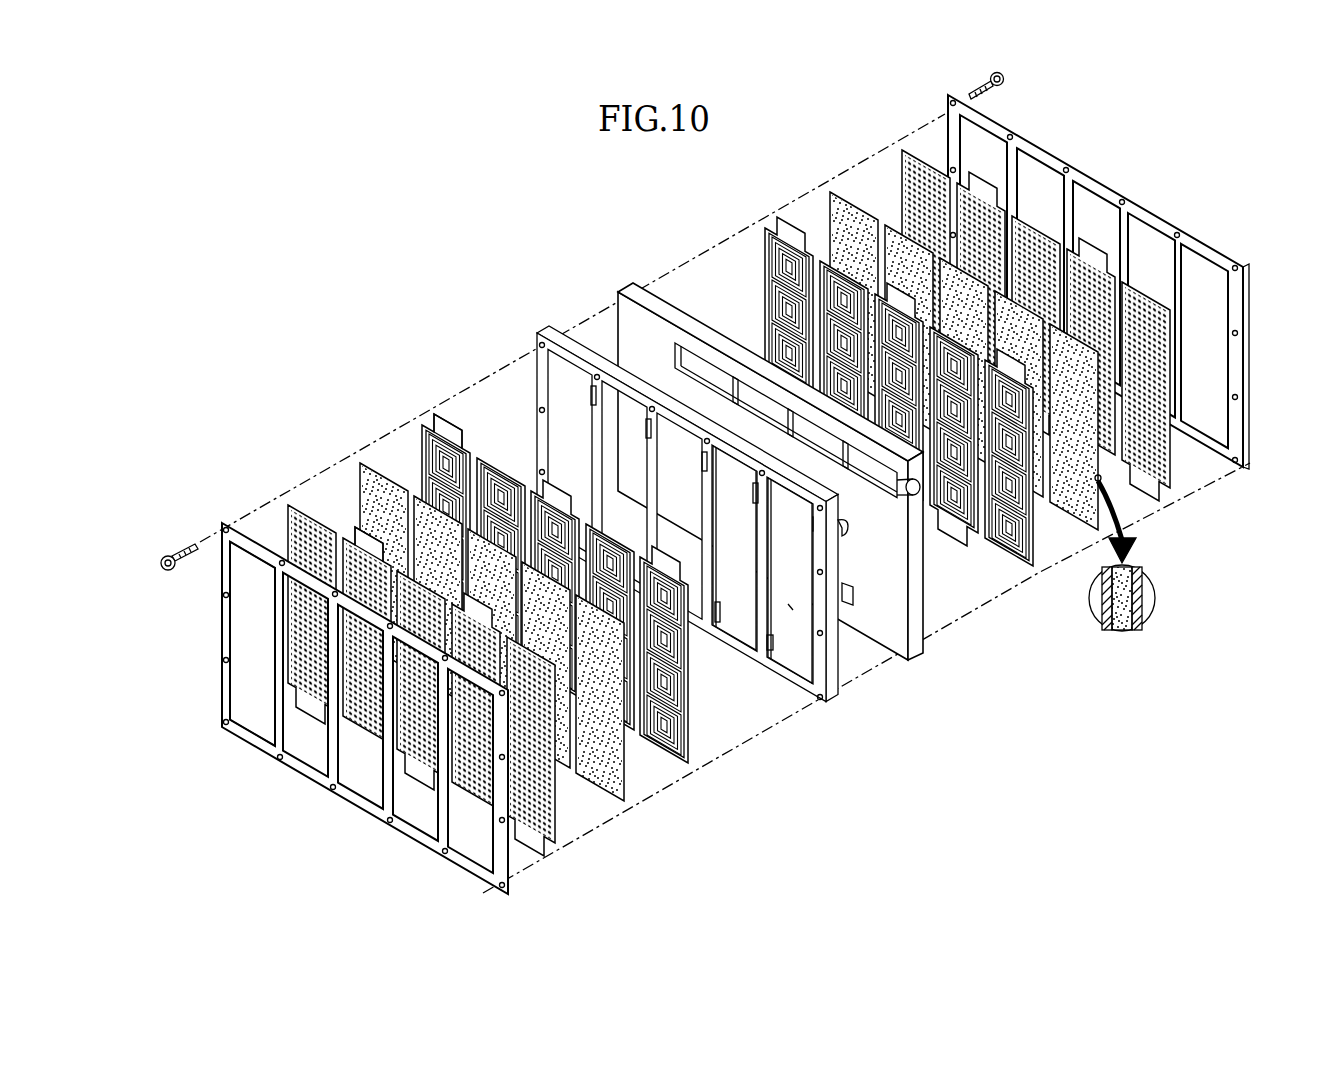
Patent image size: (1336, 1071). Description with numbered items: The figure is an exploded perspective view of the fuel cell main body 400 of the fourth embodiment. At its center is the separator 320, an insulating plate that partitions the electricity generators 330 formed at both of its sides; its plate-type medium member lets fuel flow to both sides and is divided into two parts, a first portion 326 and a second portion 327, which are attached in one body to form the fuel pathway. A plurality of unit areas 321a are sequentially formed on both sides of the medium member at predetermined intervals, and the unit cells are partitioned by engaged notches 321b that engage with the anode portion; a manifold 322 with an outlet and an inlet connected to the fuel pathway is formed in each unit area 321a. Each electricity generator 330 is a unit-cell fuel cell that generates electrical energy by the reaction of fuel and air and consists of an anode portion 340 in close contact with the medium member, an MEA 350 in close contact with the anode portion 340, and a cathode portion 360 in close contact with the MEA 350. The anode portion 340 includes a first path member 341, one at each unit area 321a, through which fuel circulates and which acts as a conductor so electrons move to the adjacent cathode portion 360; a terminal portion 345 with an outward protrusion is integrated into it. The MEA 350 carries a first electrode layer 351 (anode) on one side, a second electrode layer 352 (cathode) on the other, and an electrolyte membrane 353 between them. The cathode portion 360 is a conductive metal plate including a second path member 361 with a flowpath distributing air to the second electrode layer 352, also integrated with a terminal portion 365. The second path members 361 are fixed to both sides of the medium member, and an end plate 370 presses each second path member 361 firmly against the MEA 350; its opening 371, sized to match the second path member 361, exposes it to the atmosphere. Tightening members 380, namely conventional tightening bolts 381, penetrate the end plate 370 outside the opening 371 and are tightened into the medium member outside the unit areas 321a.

The fuel cell main body 400 is at (393, 242).
The separator 320 is at (689, 419).
The unit area 321a is at (790, 607).
The engaged notch 321b is at (737, 593).
The manifold 322 is at (845, 619).
The first portion 326 is at (542, 332).
The second portion 327 is at (621, 289).
The electricity generator 330 is at (465, 610).
The anode portion 340 is at (534, 585).
The first path member 341 is at (430, 484).
The terminal portion 345 is at (447, 415).
The MEA 350 is at (640, 806).
The first electrode layer 351 is at (1103, 613).
The second electrode layer 352 is at (1145, 615).
The electrolyte membrane 353 is at (1117, 623).
The cathode portion 360 is at (425, 648).
The second path member 361 is at (302, 500).
The terminal portion 365 is at (355, 527).
The end plate 370 is at (354, 708).
The opening 371 is at (233, 716).
The tightening member 380 is at (176, 549).
The tightening bolt 381 is at (182, 567).